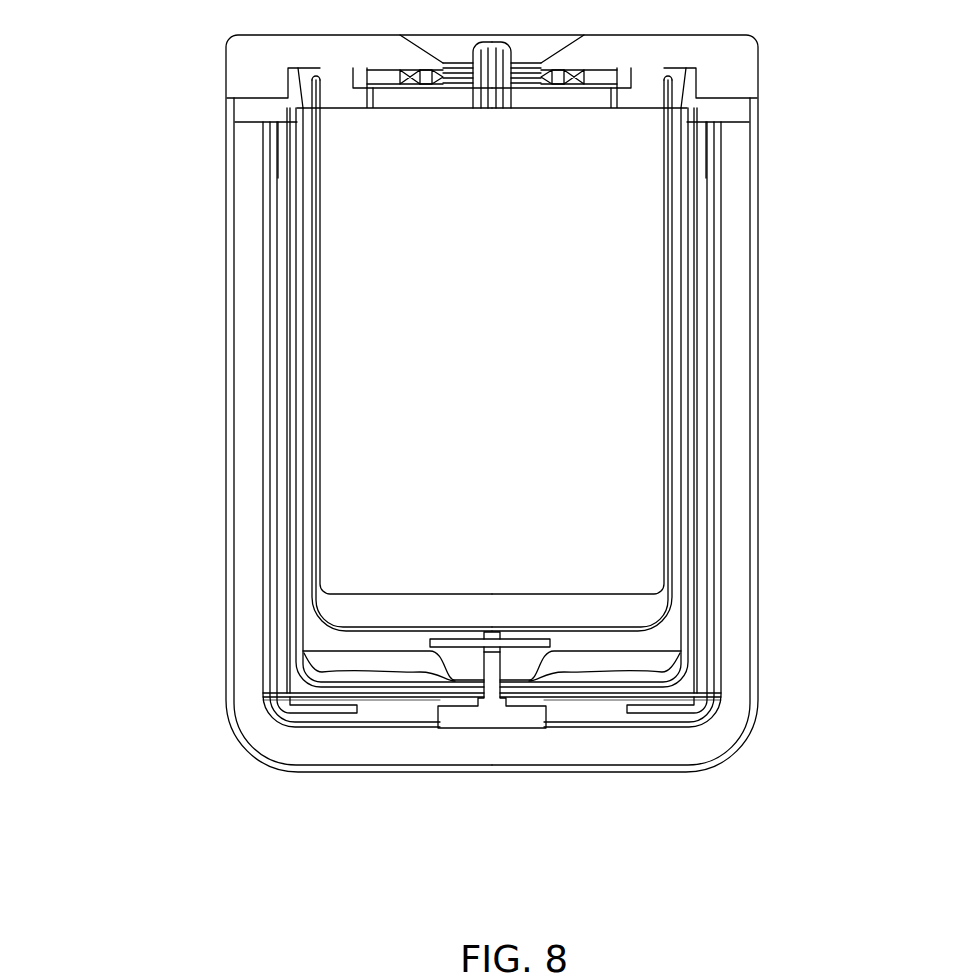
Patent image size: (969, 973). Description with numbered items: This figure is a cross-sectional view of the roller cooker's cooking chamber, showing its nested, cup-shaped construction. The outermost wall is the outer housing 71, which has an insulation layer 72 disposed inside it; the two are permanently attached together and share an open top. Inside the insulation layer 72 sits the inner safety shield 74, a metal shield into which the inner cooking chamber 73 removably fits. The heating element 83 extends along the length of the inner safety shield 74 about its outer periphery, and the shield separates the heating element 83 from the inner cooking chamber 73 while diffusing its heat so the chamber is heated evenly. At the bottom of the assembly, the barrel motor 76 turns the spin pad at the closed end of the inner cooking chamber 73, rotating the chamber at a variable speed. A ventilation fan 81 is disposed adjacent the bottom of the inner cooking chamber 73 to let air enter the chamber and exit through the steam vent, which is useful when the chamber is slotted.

The outer housing 71 is at (227, 125).
The insulation layer 72 is at (243, 212).
The heating element 83 is at (230, 323).
The inner cooking chamber 73 is at (347, 612).
The inner safety shield 74 is at (303, 587).
The ventilation fan 81 is at (430, 643).
The barrel motor 76 is at (520, 717).